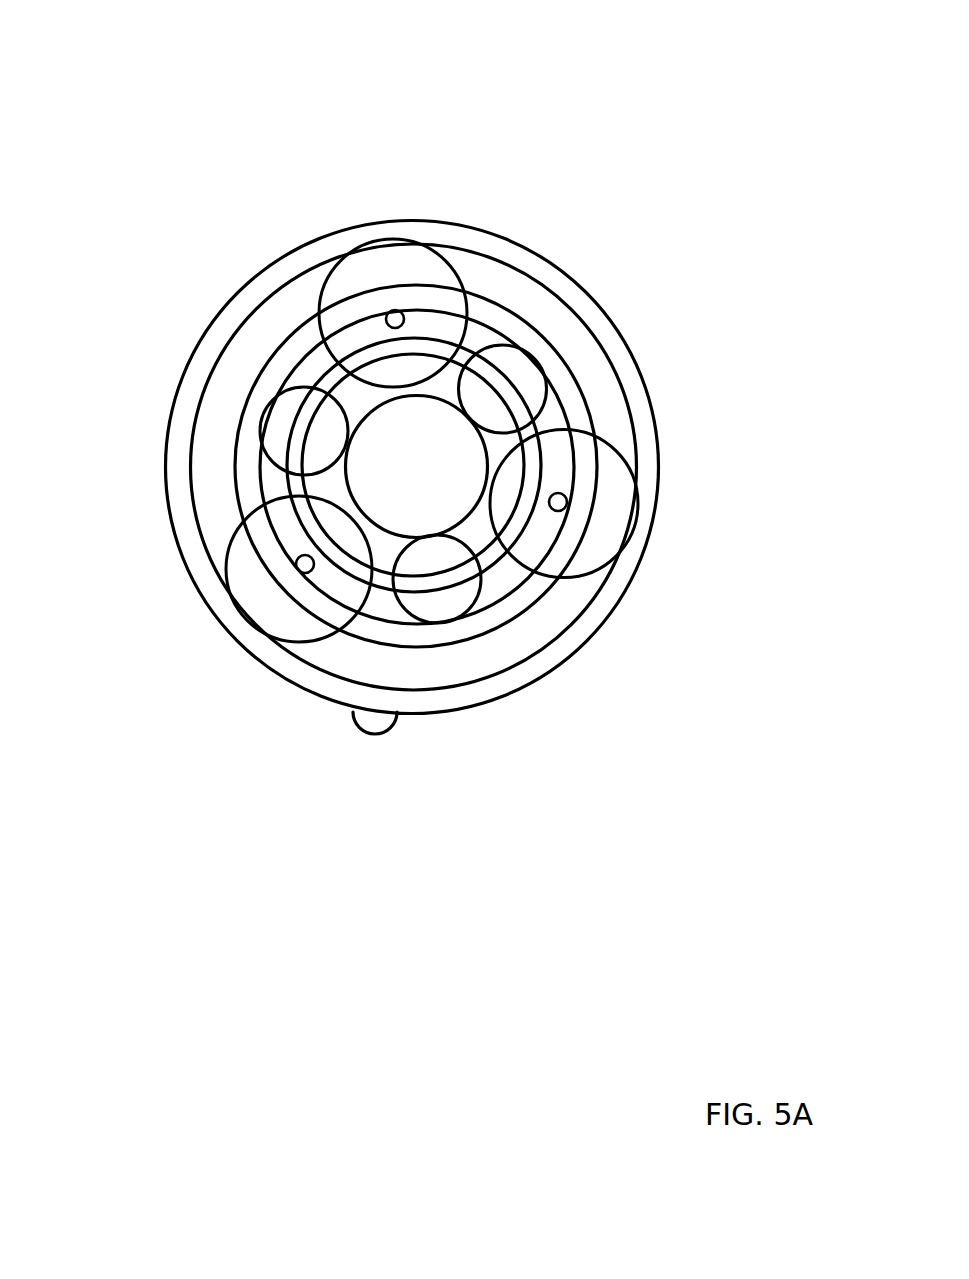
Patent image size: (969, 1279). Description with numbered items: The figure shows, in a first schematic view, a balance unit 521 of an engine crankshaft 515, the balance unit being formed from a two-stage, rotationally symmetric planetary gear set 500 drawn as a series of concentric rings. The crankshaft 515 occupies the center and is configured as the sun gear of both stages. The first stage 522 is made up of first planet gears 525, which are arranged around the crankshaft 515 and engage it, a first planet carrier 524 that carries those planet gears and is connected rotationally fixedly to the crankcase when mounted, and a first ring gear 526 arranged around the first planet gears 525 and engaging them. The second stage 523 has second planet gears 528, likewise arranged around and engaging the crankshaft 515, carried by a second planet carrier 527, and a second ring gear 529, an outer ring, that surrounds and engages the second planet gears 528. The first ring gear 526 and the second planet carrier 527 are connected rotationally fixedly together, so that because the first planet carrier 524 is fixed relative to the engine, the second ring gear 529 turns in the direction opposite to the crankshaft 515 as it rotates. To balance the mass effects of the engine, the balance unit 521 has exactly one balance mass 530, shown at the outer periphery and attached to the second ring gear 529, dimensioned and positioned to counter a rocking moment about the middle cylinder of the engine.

The two-stage planetary gear set 500 is at (307, 198).
The crankshaft 515 is at (450, 512).
The balance unit 521 is at (284, 84).
The first stage 522 is at (266, 485).
The second stage 523 is at (214, 553).
The first planet carrier 524 is at (514, 398).
The first planet gears 525 is at (282, 412).
The first ring gear 526 is at (534, 346).
The second planet carrier 527 is at (400, 312).
The second planet gears 528 is at (446, 276).
The second ring gear 529 is at (473, 229).
The balance mass 530 is at (380, 728).